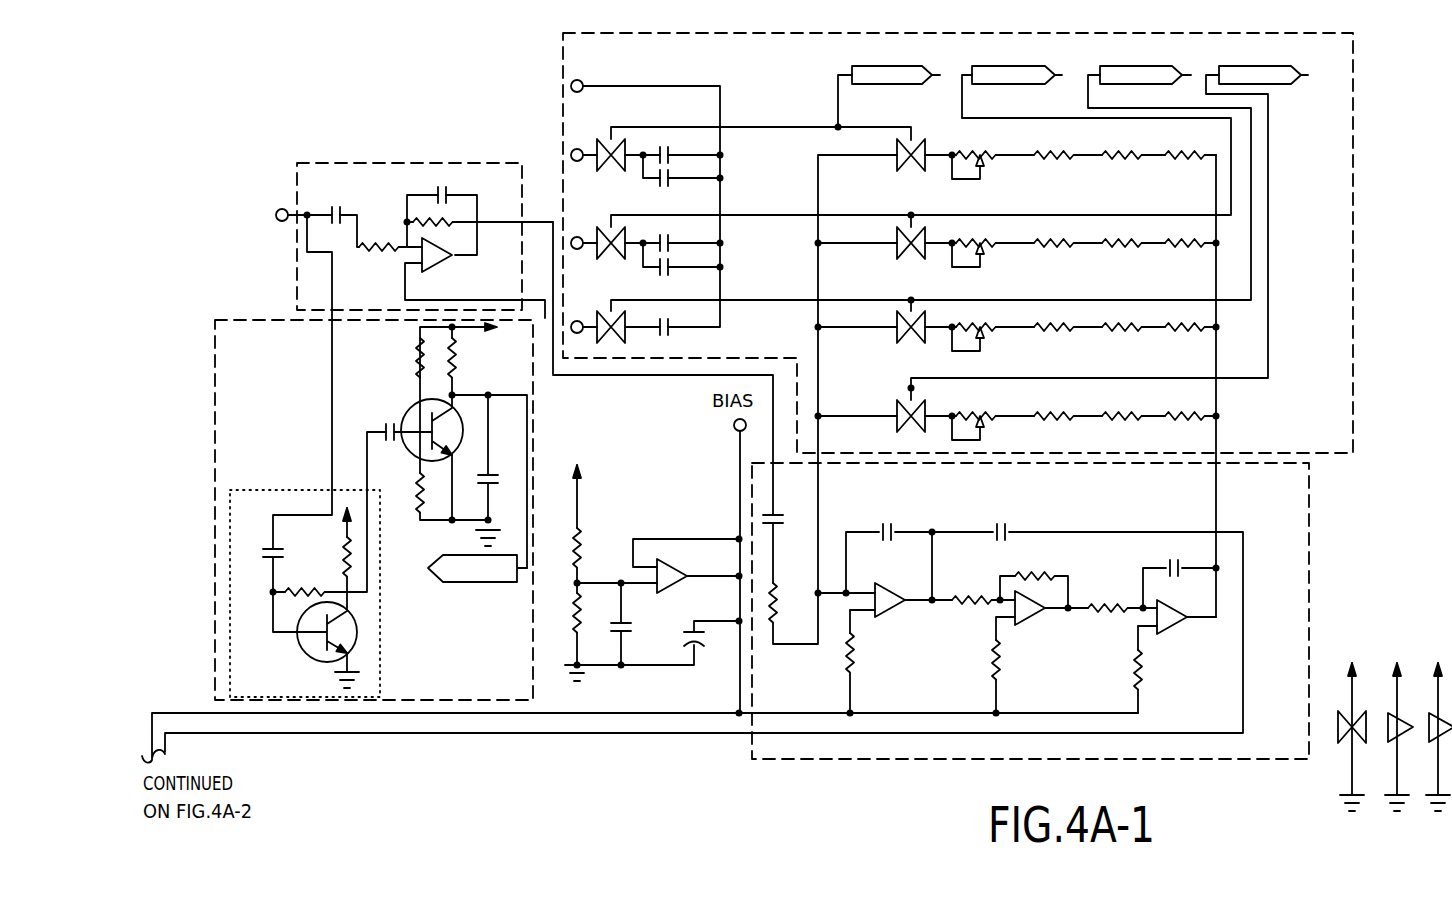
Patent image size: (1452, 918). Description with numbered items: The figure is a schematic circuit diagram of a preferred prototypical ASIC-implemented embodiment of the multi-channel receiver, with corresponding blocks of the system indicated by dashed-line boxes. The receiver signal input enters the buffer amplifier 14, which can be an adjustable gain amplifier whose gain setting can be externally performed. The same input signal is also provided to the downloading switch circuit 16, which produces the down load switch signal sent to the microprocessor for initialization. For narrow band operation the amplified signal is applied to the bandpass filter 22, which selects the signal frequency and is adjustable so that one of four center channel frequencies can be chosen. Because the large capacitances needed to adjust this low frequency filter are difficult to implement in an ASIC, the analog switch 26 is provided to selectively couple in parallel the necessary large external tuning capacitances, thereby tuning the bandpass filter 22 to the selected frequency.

The buffer amplifier 14 is at (303, 163).
The downloading switch circuit 16 is at (215, 320).
The bandpass filter 22 is at (1309, 623).
The analog switch 26 is at (1353, 148).